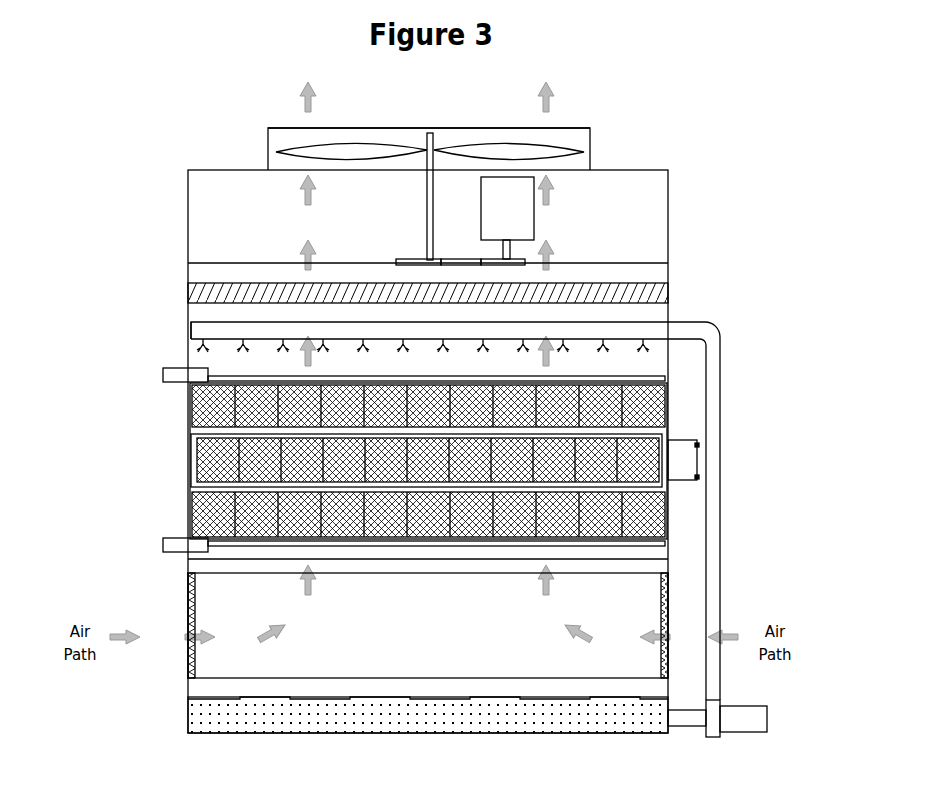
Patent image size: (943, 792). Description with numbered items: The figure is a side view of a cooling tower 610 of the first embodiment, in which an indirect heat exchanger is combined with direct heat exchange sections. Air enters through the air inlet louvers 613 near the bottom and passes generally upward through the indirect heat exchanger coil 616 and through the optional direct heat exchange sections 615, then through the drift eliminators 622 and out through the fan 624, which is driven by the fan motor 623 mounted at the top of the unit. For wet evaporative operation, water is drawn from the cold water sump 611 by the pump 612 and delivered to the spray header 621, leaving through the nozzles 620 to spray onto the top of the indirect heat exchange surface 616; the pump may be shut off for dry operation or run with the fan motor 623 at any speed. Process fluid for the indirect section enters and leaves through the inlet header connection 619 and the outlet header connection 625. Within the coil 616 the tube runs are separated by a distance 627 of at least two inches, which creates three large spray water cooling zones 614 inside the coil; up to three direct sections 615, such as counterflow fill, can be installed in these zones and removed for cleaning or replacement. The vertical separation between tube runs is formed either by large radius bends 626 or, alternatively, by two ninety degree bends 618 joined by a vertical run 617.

The cooling tower 610 is at (178, 165).
The cold water sump 611 is at (188, 715).
The pump 612 is at (767, 712).
The air inlet louvers 613 is at (188, 600).
The large spray water cooling zone 614 is at (190, 518).
The direct heat exchange section 615 is at (191, 508).
The indirect heat exchanger coil 616 is at (190, 434).
The vertical run 617 is at (666, 388).
The 90 degree bends 618 is at (663, 378).
The indirect section inlet header connection 619 is at (165, 372).
The nozzles 620 is at (205, 340).
The spray header 621 is at (660, 329).
The drift eliminators 622 is at (630, 288).
The fan motor 623 is at (535, 212).
The fan 624 is at (300, 150).
The outlet header connection 625 is at (163, 545).
The large radius bends 626 is at (665, 517).
The distance between tubes 627 is at (697, 460).